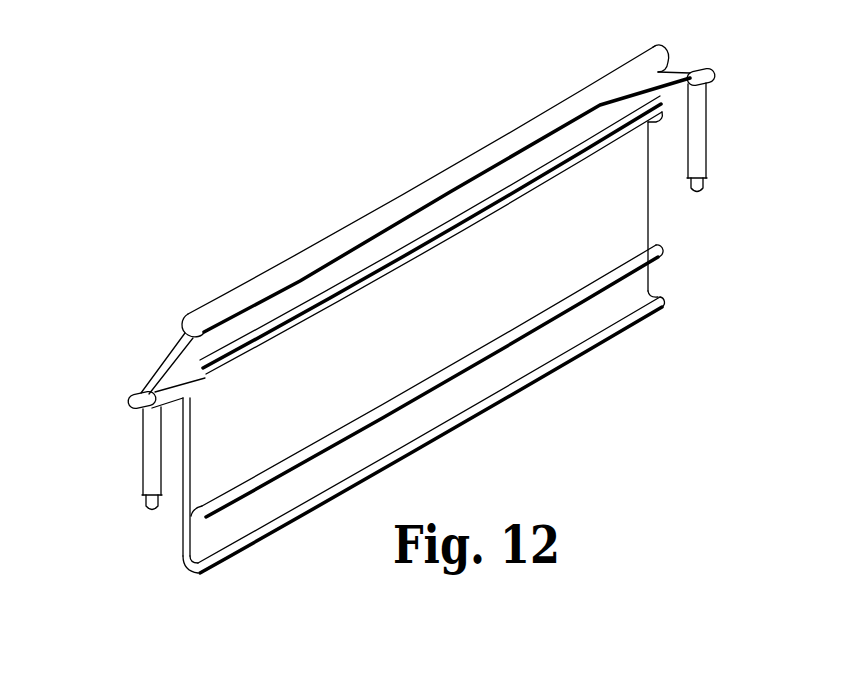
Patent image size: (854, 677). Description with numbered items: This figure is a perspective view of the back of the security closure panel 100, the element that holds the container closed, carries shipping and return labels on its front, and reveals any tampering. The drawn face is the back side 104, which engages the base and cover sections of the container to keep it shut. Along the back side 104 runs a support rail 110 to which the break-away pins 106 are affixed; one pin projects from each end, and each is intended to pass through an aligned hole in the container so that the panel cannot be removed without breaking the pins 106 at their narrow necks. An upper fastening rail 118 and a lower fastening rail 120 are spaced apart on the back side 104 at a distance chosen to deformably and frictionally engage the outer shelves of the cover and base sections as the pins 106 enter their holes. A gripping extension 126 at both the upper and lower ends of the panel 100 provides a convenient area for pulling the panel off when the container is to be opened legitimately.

The security closure panel 100 is at (345, 150).
The back side 104 is at (630, 228).
The break-away pins 106 is at (694, 150).
The support rail 110 is at (707, 67).
The upper fastening rail 118 is at (200, 373).
The lower fastening rail 120 is at (228, 497).
The gripping extension 126 is at (207, 316).